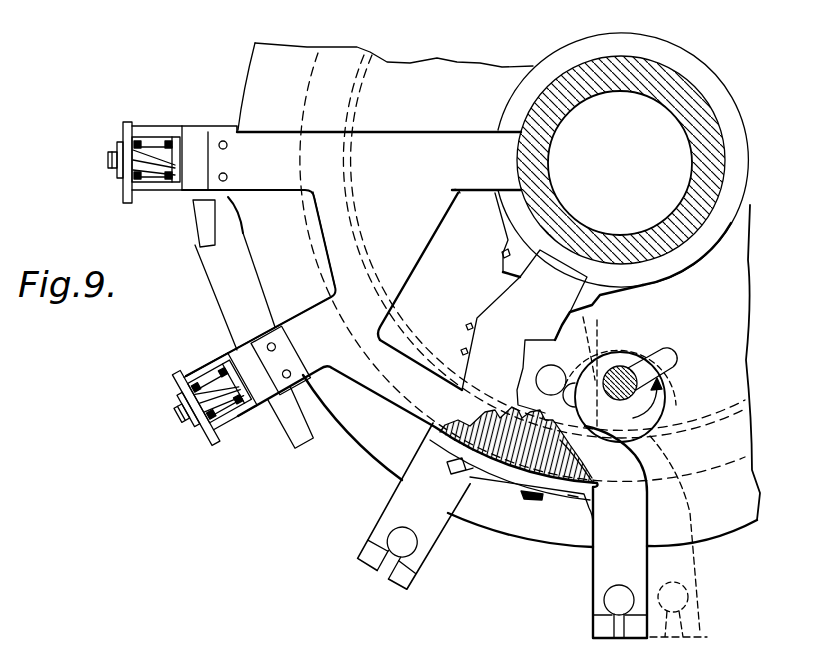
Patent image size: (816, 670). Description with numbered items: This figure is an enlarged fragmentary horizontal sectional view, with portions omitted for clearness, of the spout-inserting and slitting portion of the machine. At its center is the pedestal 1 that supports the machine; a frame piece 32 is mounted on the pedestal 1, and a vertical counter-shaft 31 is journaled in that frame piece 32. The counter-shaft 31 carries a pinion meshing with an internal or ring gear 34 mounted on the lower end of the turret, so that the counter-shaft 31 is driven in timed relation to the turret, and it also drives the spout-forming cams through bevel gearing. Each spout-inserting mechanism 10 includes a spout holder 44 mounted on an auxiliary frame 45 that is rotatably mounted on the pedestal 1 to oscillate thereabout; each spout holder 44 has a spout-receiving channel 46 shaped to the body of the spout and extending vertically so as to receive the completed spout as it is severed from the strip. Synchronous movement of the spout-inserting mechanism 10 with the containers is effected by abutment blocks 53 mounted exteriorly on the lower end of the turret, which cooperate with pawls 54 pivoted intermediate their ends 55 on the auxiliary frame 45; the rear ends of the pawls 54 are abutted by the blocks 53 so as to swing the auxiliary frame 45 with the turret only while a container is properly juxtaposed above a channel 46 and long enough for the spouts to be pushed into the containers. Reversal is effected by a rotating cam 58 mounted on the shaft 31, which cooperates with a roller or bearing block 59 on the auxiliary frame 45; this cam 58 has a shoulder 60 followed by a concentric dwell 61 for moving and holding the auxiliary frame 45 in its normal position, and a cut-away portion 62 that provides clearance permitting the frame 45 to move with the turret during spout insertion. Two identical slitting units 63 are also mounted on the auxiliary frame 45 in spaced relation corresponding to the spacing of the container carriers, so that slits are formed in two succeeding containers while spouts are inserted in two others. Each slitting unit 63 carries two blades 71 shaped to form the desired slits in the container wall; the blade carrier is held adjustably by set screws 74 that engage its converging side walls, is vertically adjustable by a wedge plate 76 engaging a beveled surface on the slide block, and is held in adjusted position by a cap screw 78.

The pedestal 1 is at (697, 123).
The spout-inserting mechanism 10 is at (428, 440).
The vertical counter-shaft 31 is at (640, 380).
The frame piece 32 is at (741, 522).
The internal gear 34 is at (517, 465).
The spout holder 44 is at (368, 540).
The auxiliary frame 45 is at (375, 382).
The spout-receiving channel 46 is at (392, 578).
The abutment block 53 is at (485, 462).
The pawl 54 is at (572, 500).
The pivot of pawl 55 is at (530, 503).
The rotating cam 58 is at (664, 388).
The roller or bearing block 59 is at (540, 370).
The shoulder 60 is at (594, 344).
The concentric dwell 61 is at (670, 407).
The cut-away portion 62 is at (640, 362).
The slitting unit 63 is at (120, 194).
The blade 71 is at (147, 168).
The set screw 74 is at (168, 142).
The wedge plate 76 is at (118, 142).
The cap screw 78 is at (108, 158).